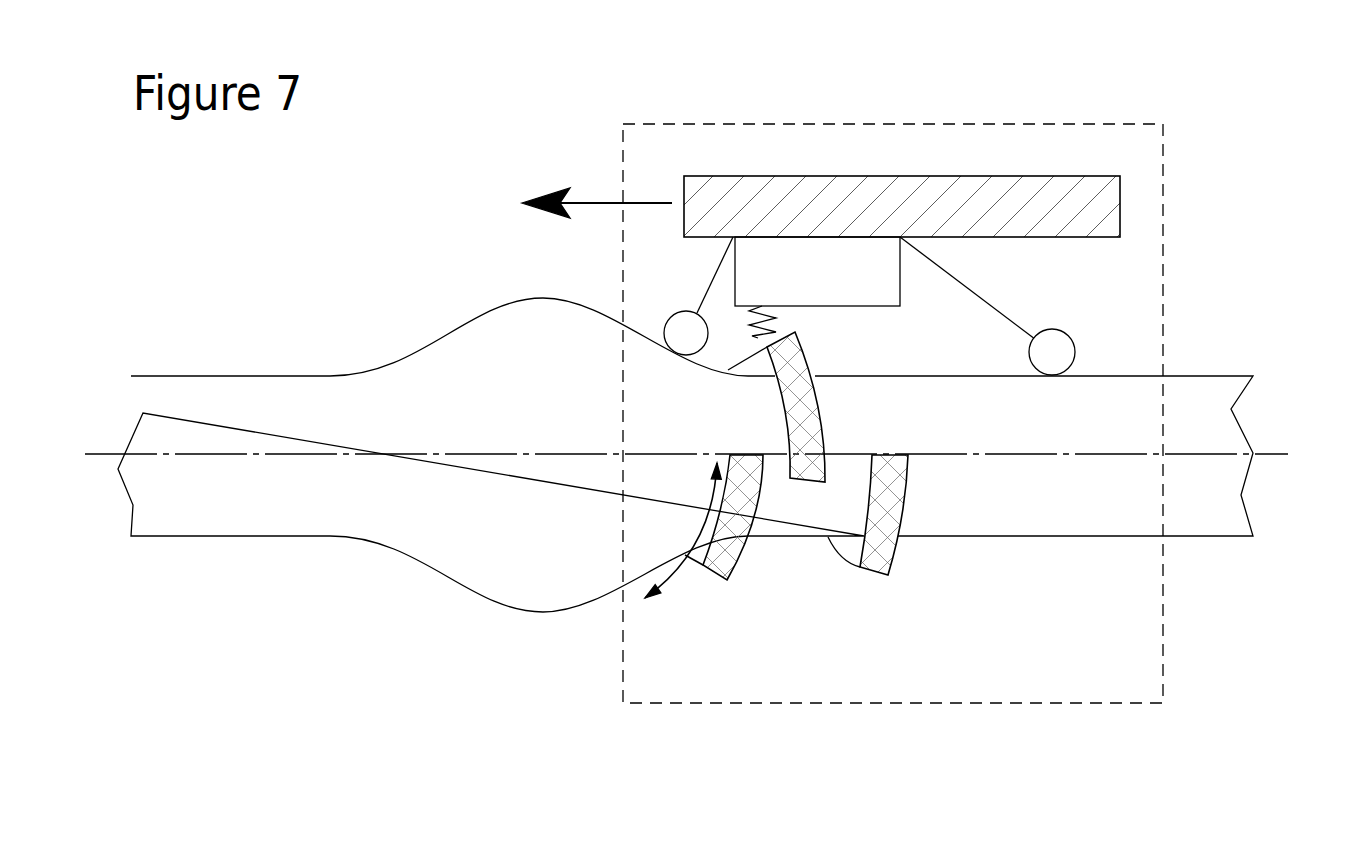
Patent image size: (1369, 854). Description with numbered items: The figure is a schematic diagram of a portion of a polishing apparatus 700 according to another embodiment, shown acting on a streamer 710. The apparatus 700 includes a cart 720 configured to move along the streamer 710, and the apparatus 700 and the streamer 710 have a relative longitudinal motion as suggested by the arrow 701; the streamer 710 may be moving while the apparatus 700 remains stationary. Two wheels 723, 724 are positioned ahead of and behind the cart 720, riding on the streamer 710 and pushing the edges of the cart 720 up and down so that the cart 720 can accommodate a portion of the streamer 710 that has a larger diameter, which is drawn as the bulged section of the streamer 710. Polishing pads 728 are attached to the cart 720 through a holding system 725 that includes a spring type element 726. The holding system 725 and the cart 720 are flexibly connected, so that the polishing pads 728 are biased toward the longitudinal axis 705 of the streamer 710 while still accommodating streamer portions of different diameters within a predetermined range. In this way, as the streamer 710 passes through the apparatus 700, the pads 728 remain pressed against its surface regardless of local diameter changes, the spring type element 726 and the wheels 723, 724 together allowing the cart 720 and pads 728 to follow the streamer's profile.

The polishing apparatus 700 is at (1163, 146).
The arrow 701 is at (588, 202).
The longitudinal axis 705 is at (1263, 450).
The streamer 710 is at (1204, 394).
The cart 720 is at (898, 197).
The wheel 723 is at (668, 311).
The wheel 724 is at (1055, 350).
The holding system 725 is at (857, 280).
The spring type element 726 is at (773, 320).
The polishing pads 728 is at (808, 468).